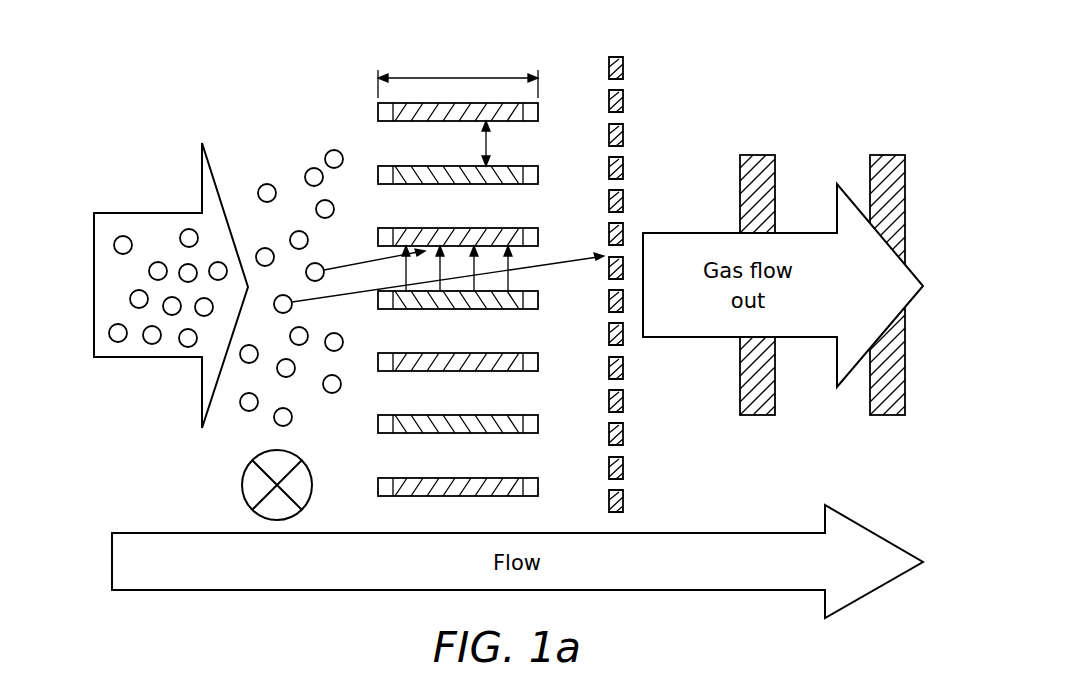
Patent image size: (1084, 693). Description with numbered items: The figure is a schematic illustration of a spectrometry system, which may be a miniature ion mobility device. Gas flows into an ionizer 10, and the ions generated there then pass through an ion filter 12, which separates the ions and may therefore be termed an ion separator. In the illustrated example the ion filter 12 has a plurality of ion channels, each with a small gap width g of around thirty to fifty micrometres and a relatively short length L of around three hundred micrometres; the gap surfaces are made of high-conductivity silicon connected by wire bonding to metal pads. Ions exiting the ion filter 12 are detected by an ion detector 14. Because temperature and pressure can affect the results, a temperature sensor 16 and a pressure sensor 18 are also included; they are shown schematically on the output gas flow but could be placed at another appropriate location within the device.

The ionizer 10 is at (349, 240).
The ion filter 12 is at (458, 254).
The ion detector 14 is at (628, 415).
The temperature sensor 16 is at (753, 155).
The pressure sensor 18 is at (883, 155).